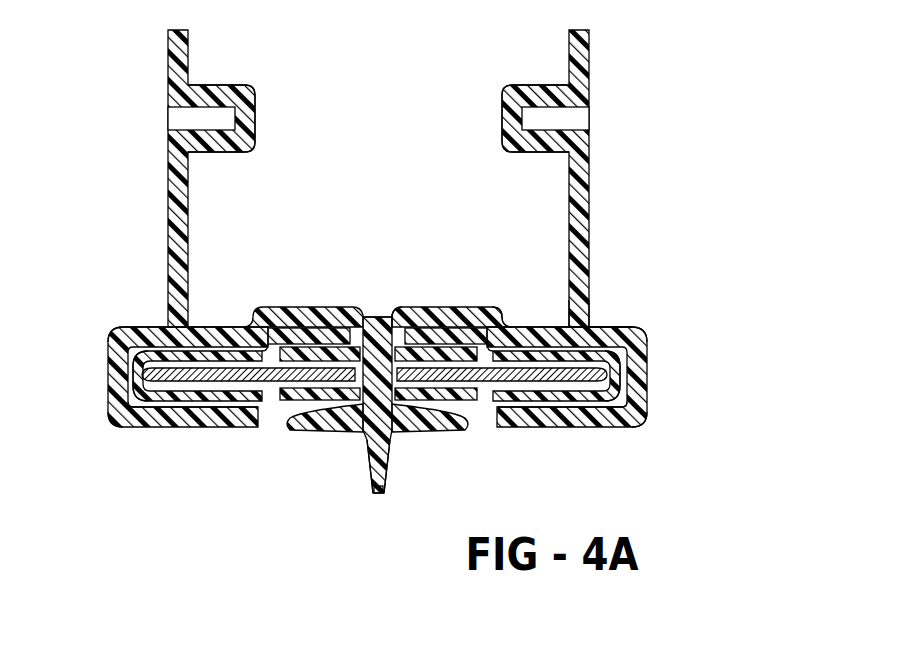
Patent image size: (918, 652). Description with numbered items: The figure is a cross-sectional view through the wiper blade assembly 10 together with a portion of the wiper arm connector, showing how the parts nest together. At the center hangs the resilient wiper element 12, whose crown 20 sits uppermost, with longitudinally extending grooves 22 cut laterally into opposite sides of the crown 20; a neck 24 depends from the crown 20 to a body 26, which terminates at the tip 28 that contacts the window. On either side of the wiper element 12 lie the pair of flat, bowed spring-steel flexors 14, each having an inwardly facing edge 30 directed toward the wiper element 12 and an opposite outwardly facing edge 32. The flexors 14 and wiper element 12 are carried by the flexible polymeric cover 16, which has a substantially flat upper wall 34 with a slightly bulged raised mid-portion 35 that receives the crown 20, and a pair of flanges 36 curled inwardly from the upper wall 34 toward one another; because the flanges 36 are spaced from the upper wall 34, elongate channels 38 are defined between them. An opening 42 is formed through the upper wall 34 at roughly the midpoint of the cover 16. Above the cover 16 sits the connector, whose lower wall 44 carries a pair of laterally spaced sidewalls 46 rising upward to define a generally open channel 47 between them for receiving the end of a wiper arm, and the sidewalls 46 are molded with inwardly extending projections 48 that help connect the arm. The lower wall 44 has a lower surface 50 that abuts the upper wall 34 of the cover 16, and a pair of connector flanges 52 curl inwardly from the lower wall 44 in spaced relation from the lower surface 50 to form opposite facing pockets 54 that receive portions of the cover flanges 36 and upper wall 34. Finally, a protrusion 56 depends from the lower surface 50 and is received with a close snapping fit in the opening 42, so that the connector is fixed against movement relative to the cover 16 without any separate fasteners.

The wiper blade assembly 10 is at (702, 92).
The wiper element 12 is at (385, 466).
The flexors 14 is at (112, 356).
The cover 16 is at (212, 324).
The crown 20 is at (350, 345).
The grooves 22 is at (255, 420).
The neck 24 is at (356, 438).
The body 26 is at (362, 442).
The tip 28 is at (374, 494).
The inwardly facing edge 30 is at (262, 420).
The outwardly facing edge 32 is at (110, 375).
The upper wall 34 is at (594, 343).
The raised mid-portion 35 is at (482, 322).
The flanges 36 is at (170, 428).
The channels 38 is at (120, 328).
The opening 42 is at (413, 333).
The lower wall 44 is at (572, 312).
The sidewalls 46 is at (168, 44).
The open channel 47 is at (374, 95).
The projections 48 is at (226, 88).
The lower surface 50 is at (257, 345).
The flanges 52 is at (180, 430).
The pockets 54 is at (125, 428).
The protrusion 56 is at (381, 345).